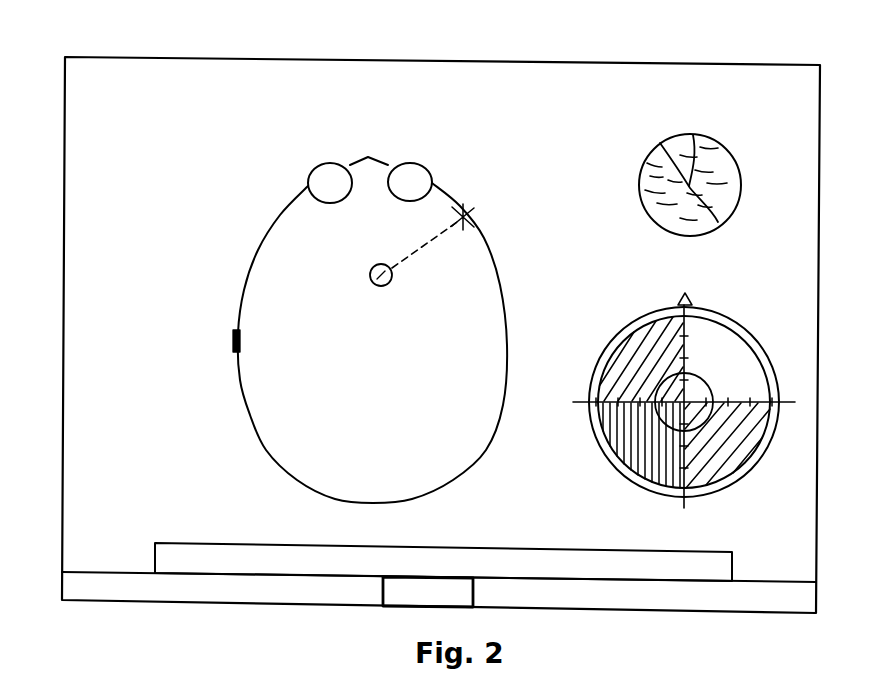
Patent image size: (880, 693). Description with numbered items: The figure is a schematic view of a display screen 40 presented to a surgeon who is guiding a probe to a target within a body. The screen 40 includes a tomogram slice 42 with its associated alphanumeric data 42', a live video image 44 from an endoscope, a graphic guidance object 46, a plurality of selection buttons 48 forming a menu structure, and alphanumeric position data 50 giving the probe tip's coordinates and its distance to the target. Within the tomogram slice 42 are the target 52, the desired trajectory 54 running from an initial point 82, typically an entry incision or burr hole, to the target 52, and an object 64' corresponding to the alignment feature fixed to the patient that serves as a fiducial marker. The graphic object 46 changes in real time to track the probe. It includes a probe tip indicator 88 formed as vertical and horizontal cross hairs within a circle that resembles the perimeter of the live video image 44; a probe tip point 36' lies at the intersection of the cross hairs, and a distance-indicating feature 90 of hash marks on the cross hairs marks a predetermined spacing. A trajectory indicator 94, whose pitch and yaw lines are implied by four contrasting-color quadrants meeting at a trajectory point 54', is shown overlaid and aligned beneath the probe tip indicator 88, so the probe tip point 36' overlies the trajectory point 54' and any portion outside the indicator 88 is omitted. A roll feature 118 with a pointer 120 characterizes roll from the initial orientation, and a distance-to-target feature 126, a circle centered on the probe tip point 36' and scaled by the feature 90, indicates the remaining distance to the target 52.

The display screen 40 is at (462, 60).
The tomogram slice 42 is at (348, 330).
The alphanumeric data 42' is at (110, 172).
The live video image 44 is at (667, 140).
The graphic guidance object 46 is at (590, 490).
The selection buttons 48 is at (50, 587).
The alphanumeric position data 50 is at (212, 543).
The target 52 is at (370, 272).
The desired trajectory 54 is at (438, 247).
The trajectory point 54' is at (752, 374).
The object corresponding to alignment feature 64' is at (211, 317).
The initial point 82 is at (468, 215).
The probe tip indicator 88 is at (750, 456).
The distance-indicating feature 90 is at (690, 360).
The trajectory indicator 94 is at (632, 345).
The roll feature 118 is at (705, 497).
The pointer 120 is at (703, 287).
The distance-to-target feature 126 is at (713, 381).
The probe tip point 36' is at (598, 374).